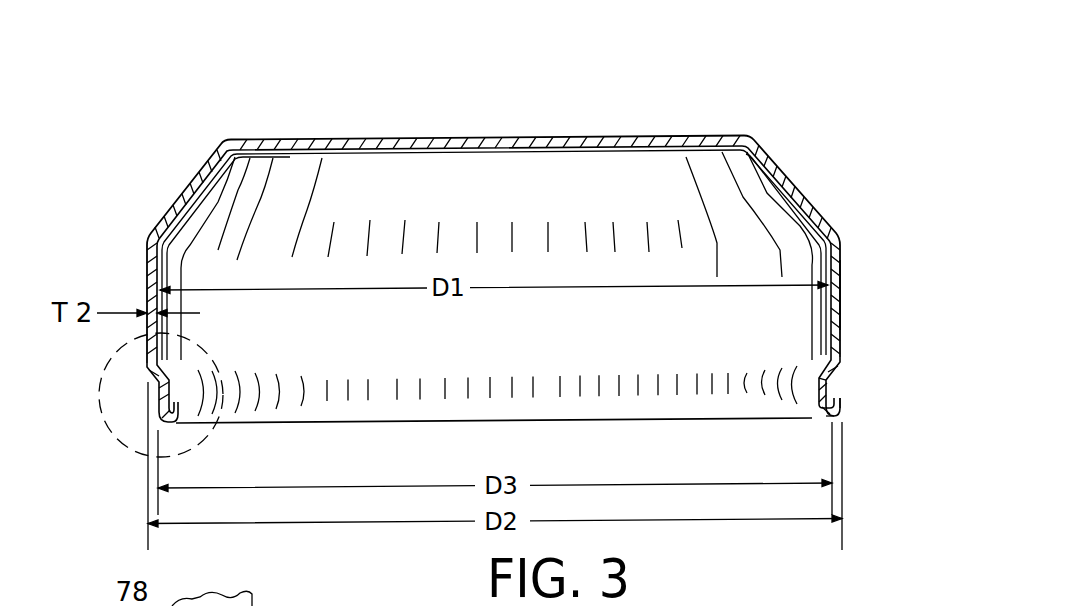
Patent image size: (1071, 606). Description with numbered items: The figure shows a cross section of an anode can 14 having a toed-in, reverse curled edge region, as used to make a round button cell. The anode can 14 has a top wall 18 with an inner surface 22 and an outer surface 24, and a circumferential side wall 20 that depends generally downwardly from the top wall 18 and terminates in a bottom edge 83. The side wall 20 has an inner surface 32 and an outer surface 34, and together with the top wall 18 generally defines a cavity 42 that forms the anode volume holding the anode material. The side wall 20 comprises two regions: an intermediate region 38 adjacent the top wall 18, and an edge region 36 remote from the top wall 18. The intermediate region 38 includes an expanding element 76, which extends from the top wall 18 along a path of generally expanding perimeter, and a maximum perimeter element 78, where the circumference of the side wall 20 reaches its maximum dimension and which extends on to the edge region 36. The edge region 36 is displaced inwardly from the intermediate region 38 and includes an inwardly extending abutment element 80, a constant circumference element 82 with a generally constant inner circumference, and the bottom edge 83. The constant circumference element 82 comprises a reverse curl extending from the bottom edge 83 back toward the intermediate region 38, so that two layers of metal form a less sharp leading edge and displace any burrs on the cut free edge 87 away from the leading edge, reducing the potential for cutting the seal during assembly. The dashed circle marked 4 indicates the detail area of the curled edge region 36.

The anode can 14 is at (752, 93).
The top wall 18 is at (380, 137).
The inner surface 22 is at (504, 152).
The outer surface 24 is at (600, 136).
The expanding element 76 is at (791, 185).
The intermediate region 38 is at (842, 229).
The outer surface 34 is at (841, 263).
The side wall 20 is at (840, 293).
The maximum perimeter element 78 is at (836, 313).
The inner surface 32 is at (825, 333).
The detail area (FIG. 4) 4 is at (216, 372).
The inwardly extending abutment element 80 is at (838, 372).
The cut free edge 87 is at (830, 383).
The edge region 36 is at (835, 397).
The constant circumference element 82 is at (838, 412).
The bottom edge 83 is at (823, 420).
The cavity 42 is at (742, 410).